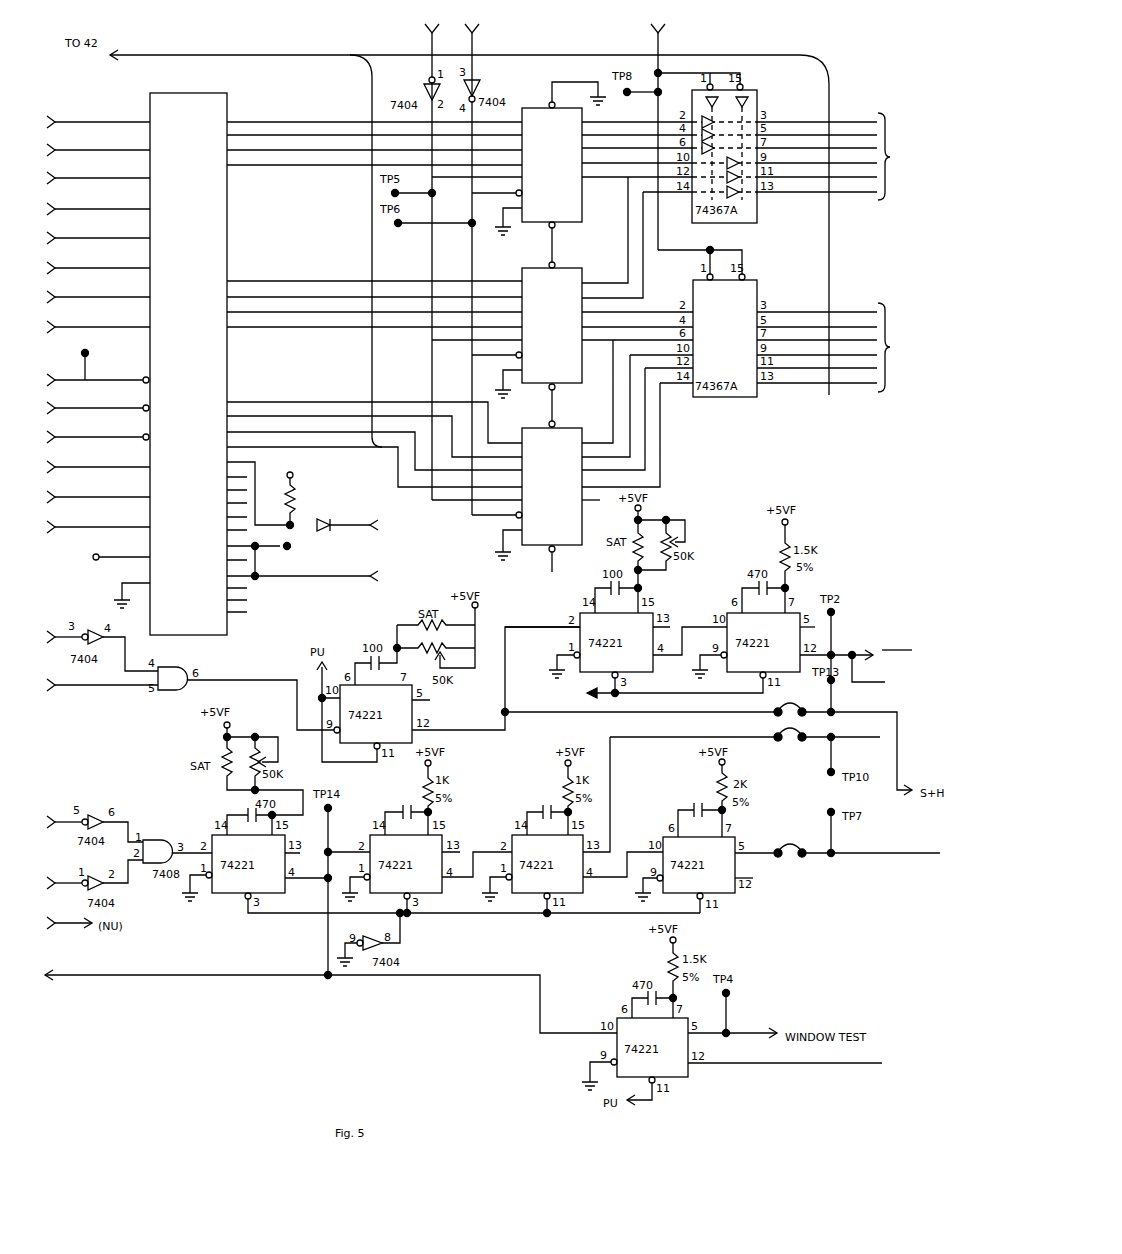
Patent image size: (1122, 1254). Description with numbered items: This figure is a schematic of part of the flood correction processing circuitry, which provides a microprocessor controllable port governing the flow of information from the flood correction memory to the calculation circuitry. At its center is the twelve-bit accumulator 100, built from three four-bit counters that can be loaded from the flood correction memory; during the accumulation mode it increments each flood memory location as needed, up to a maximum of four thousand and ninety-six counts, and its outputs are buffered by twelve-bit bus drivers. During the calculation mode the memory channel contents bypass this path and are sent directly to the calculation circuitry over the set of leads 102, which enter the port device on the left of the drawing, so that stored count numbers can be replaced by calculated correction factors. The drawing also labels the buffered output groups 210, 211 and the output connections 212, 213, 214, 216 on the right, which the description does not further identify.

The set of leads 102 is at (90, 100).
The twelve-bit accumulator 100 is at (615, 247).
The 74367A buffer output lines 210 is at (835, 156).
The second 74367A buffer output lines 211 is at (835, 347).
The ADS output line 212 is at (856, 676).
The switch 213 is at (848, 737).
The PULSE output line 214 is at (872, 856).
The WINDOW TEST output line 216 is at (833, 1063).